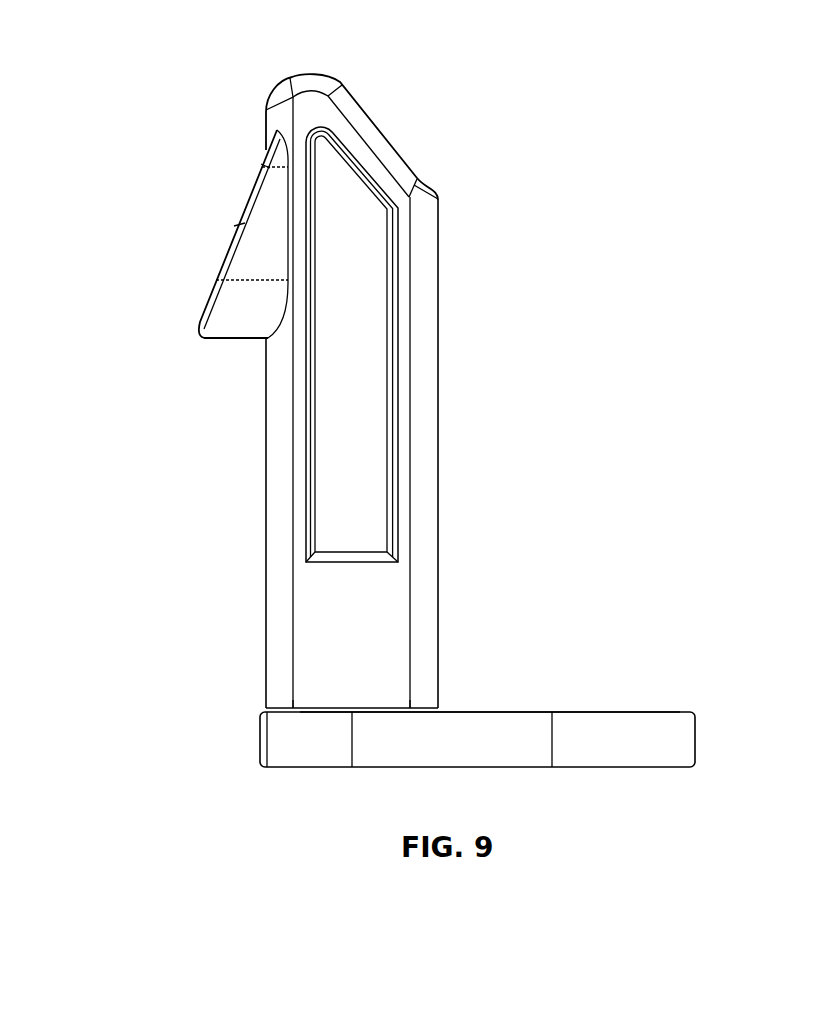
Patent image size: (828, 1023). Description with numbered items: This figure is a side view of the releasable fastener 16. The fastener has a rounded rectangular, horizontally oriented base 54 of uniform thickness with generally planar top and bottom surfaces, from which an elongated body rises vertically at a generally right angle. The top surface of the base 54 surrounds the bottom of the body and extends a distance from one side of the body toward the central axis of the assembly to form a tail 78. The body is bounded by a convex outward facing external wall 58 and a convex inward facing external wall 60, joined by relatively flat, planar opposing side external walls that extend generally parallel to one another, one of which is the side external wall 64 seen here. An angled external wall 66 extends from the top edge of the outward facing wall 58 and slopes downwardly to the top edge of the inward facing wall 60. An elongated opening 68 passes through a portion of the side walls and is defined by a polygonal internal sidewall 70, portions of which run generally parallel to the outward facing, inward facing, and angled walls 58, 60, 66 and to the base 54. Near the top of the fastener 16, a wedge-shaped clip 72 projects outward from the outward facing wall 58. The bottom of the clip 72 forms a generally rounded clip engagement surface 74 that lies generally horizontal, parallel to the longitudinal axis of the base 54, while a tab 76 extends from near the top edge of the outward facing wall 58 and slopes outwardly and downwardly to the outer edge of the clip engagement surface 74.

The releasable fastener 16 is at (124, 50).
The base 54 is at (305, 757).
The outward facing external wall 58 is at (272, 537).
The inward facing external wall 60 is at (438, 437).
The side external wall 64 is at (343, 641).
The angled external wall 66 is at (378, 121).
The elongated opening 68 is at (369, 372).
The polygonal internal sidewall 70 is at (393, 292).
The wedge-shaped clip 72 is at (206, 311).
The clip engagement surface 74 is at (232, 342).
The tab 76 is at (243, 224).
The tail 78 is at (622, 711).